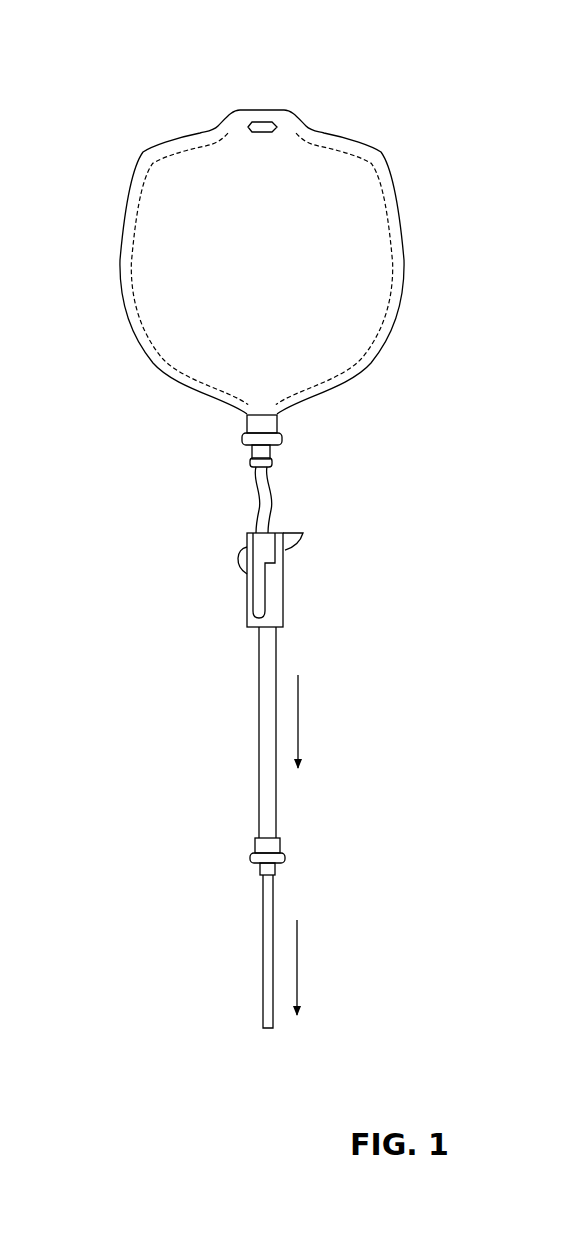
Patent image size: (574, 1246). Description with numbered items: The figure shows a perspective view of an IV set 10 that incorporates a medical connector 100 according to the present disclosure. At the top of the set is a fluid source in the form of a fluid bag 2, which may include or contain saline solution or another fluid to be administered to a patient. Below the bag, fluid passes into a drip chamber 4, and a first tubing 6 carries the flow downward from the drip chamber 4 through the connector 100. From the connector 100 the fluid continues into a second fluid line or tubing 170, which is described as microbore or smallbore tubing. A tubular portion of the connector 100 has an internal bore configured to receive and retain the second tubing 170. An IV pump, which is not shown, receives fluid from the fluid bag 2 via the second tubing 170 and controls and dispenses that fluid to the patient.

The IV set 10 is at (139, 32).
The fluid bag 2 is at (120, 292).
The drip chamber 4 is at (245, 592).
The first tubing 6 is at (257, 708).
The medical connector 100 is at (243, 844).
The second tubing 170 is at (265, 950).